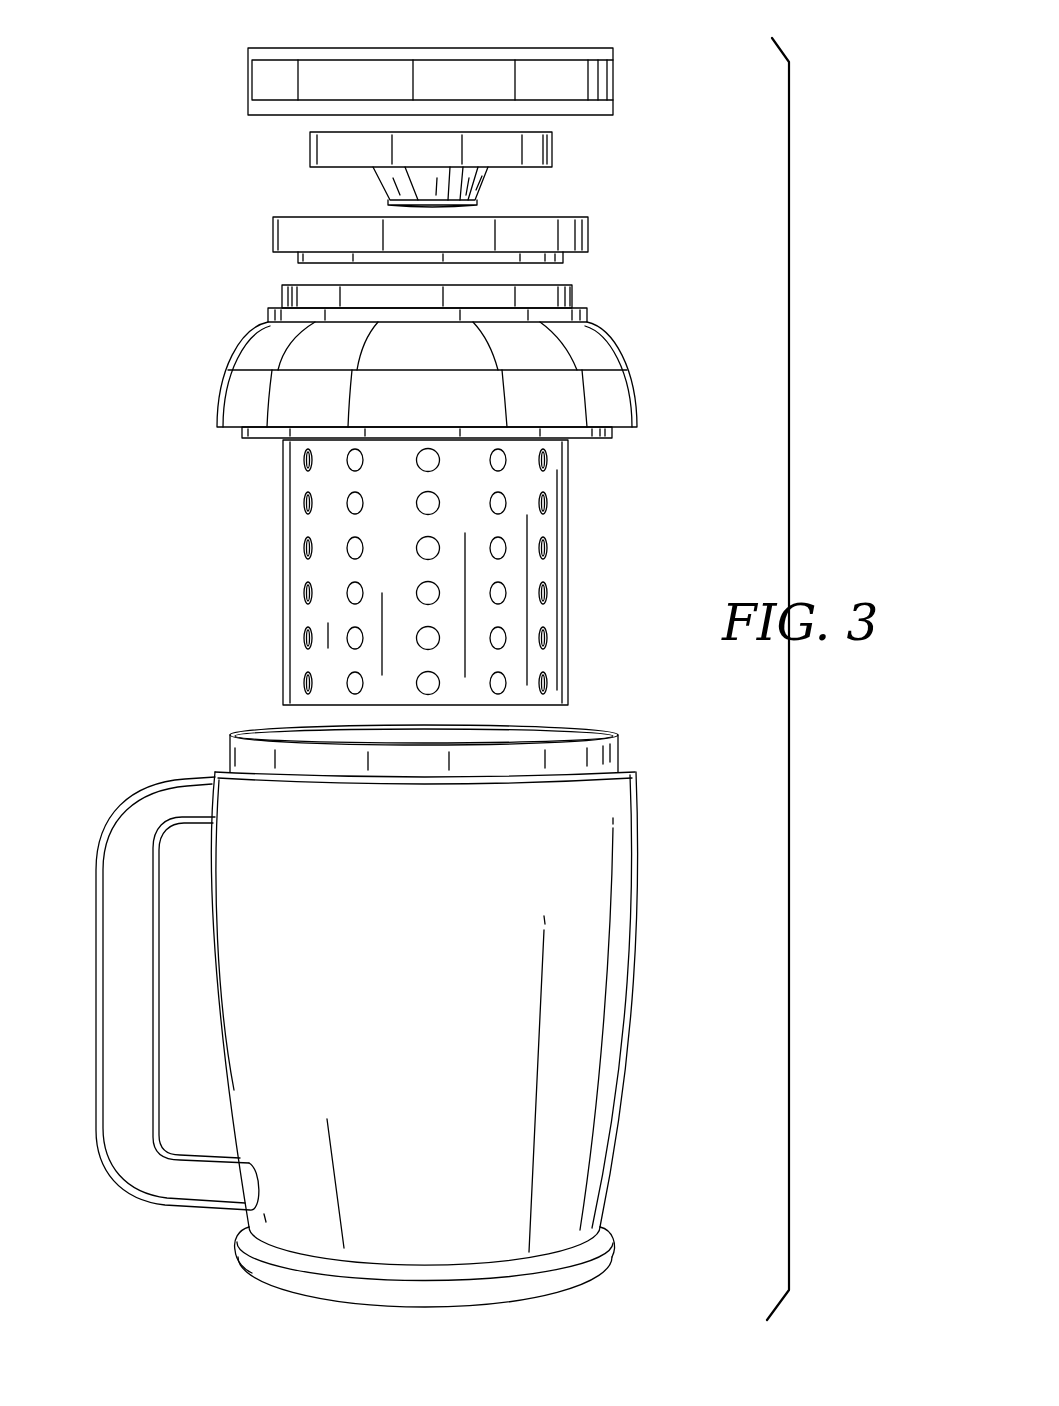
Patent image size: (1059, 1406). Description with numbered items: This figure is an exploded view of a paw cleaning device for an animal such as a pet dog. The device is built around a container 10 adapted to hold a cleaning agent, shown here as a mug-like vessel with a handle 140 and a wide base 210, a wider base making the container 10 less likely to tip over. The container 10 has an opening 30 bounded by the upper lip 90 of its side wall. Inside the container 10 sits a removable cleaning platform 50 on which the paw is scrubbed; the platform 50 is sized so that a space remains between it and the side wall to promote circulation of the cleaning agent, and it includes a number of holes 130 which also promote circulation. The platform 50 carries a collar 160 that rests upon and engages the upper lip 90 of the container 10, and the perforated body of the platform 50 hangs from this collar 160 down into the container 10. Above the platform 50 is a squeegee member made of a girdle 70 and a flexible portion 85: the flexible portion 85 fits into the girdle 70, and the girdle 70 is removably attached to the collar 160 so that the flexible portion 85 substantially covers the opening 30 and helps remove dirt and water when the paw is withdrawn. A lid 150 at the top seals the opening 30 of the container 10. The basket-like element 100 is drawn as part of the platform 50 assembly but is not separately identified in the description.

The container 10 is at (415, 1016).
The opening 30 is at (577, 725).
The cleaning platform 50 is at (453, 346).
The girdle 70 is at (600, 232).
The flexible portion 85 is at (560, 148).
The upper lip 90 is at (497, 708).
The perforated basket 100 is at (439, 572).
The holes 130 is at (303, 545).
The handle 140 is at (130, 805).
The lid 150 is at (632, 68).
The collar 160 is at (242, 333).
The base 210 is at (618, 1252).